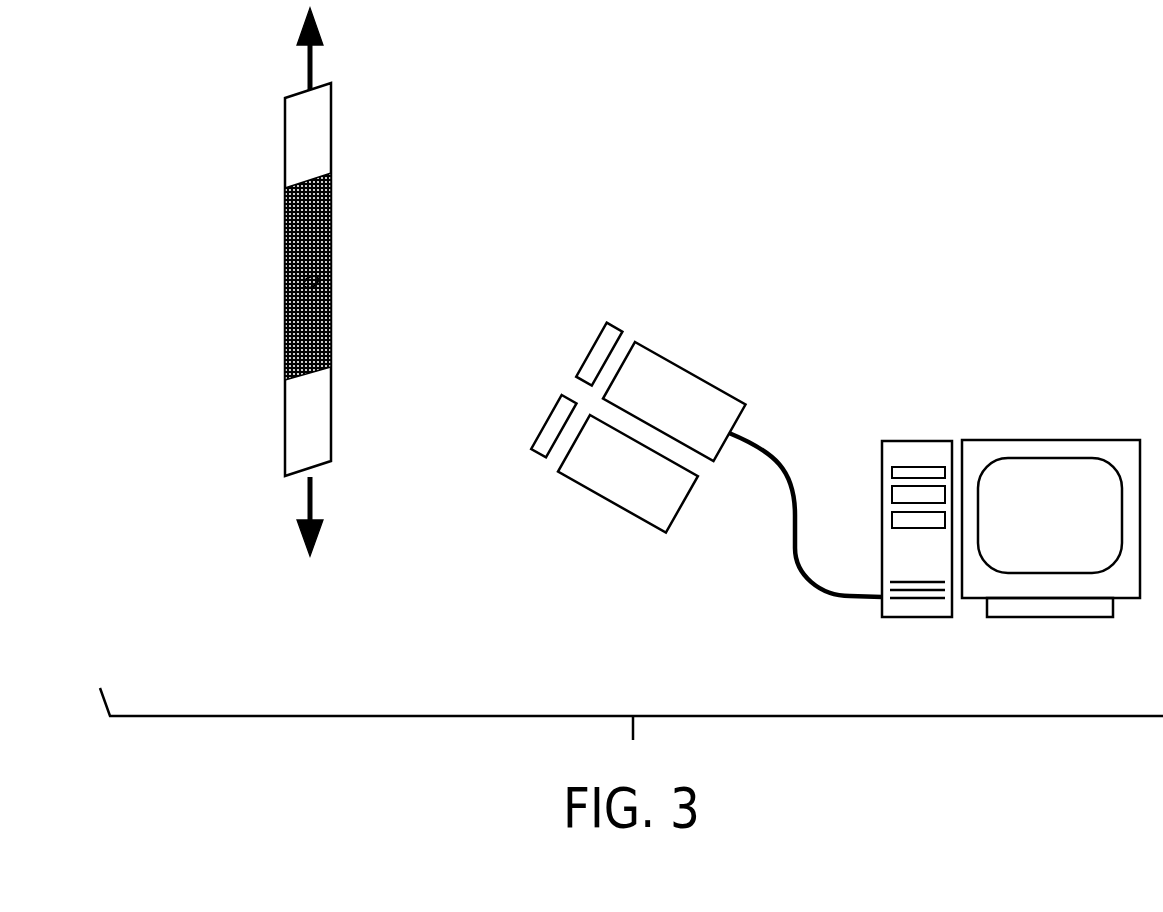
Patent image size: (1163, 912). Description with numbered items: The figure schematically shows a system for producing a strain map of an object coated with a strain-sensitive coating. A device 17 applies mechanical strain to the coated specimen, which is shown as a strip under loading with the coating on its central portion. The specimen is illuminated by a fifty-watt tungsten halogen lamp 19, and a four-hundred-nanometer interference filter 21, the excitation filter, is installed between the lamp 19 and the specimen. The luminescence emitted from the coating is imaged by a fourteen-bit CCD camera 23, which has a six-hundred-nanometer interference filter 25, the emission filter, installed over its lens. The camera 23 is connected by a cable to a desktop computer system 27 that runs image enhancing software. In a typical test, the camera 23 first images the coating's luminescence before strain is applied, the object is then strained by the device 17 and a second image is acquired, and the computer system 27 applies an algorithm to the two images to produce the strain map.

The device to apply strain 17 is at (338, 123).
The tungsten halogen lamp 19 is at (687, 507).
The interference filter 21 is at (535, 419).
The CCD camera 23 is at (733, 387).
The interference filter 25 is at (587, 333).
The desktop computer system 27 is at (962, 432).